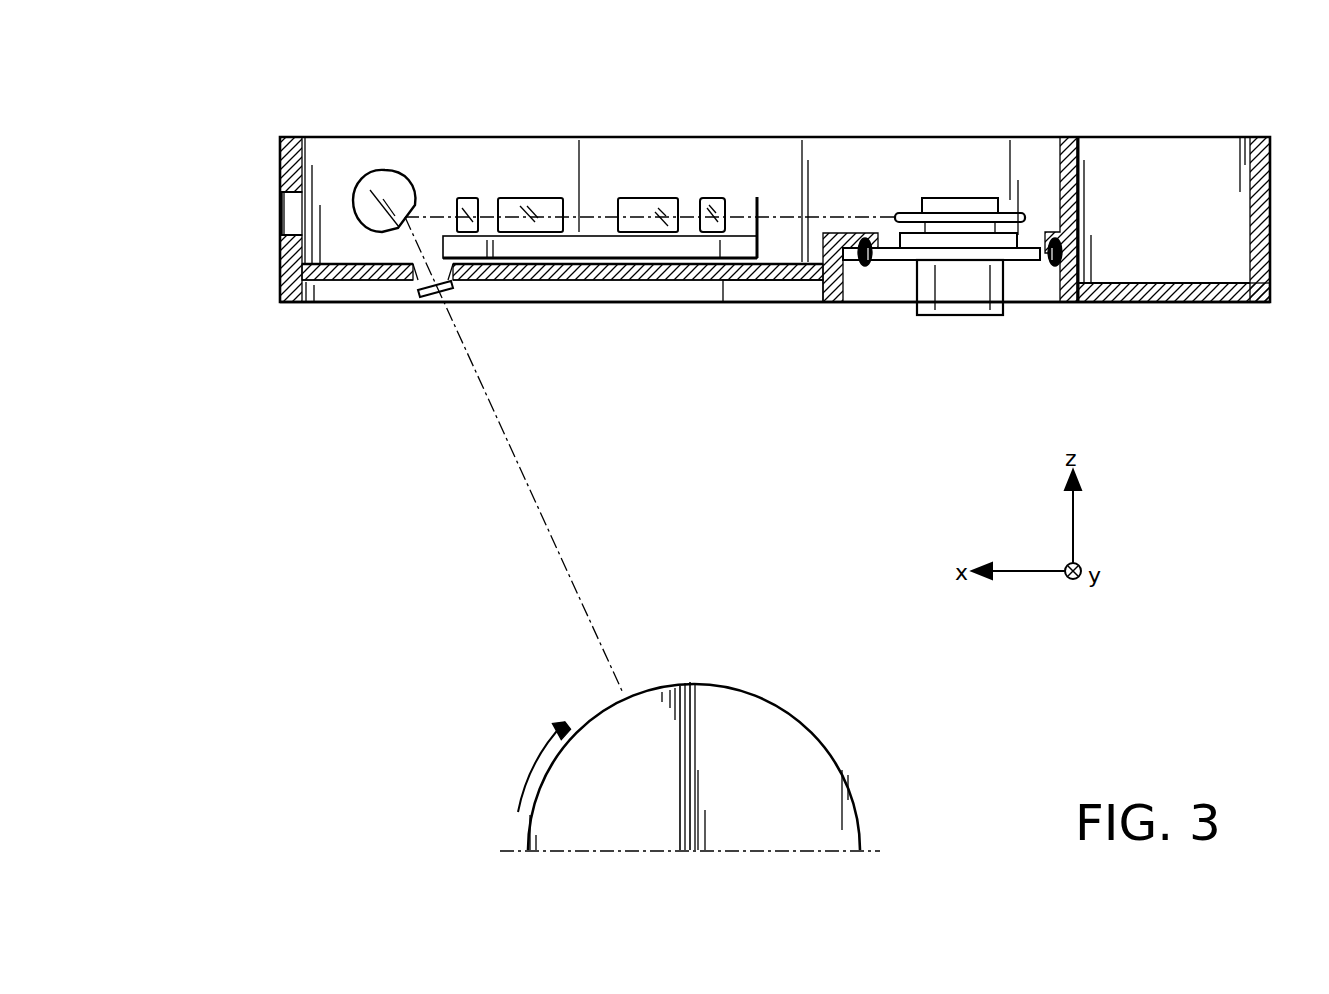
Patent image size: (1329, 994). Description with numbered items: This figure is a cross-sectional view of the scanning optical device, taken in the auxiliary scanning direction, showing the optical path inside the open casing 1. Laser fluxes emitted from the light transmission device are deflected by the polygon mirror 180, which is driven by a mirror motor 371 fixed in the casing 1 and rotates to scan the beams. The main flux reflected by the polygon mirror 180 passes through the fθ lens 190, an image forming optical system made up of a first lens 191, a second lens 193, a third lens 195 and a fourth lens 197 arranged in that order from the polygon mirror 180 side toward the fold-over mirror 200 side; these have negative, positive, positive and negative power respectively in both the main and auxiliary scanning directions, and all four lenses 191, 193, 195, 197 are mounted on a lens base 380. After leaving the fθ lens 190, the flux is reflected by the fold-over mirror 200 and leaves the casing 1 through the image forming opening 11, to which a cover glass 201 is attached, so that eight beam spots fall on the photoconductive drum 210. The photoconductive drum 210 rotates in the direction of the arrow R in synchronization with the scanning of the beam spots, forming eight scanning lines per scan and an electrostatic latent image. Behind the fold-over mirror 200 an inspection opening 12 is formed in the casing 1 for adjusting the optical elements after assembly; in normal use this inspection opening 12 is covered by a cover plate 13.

The casing 1 is at (1270, 230).
The image forming opening 11 is at (411, 292).
The inspection opening 12 is at (279, 200).
The cover plate 13 is at (279, 237).
The polygon mirror 180 is at (975, 198).
The fθ lens 190 is at (593, 133).
The first lens 191 is at (698, 159).
The second lens 193 is at (645, 198).
The third lens 195 is at (532, 198).
The fourth lens 197 is at (467, 198).
The fold-over mirror 200 is at (388, 170).
The cover glass 201 is at (433, 299).
The photoconductive drum 210 is at (832, 708).
The mirror motor 371 is at (963, 292).
The lens base 380 is at (632, 248).